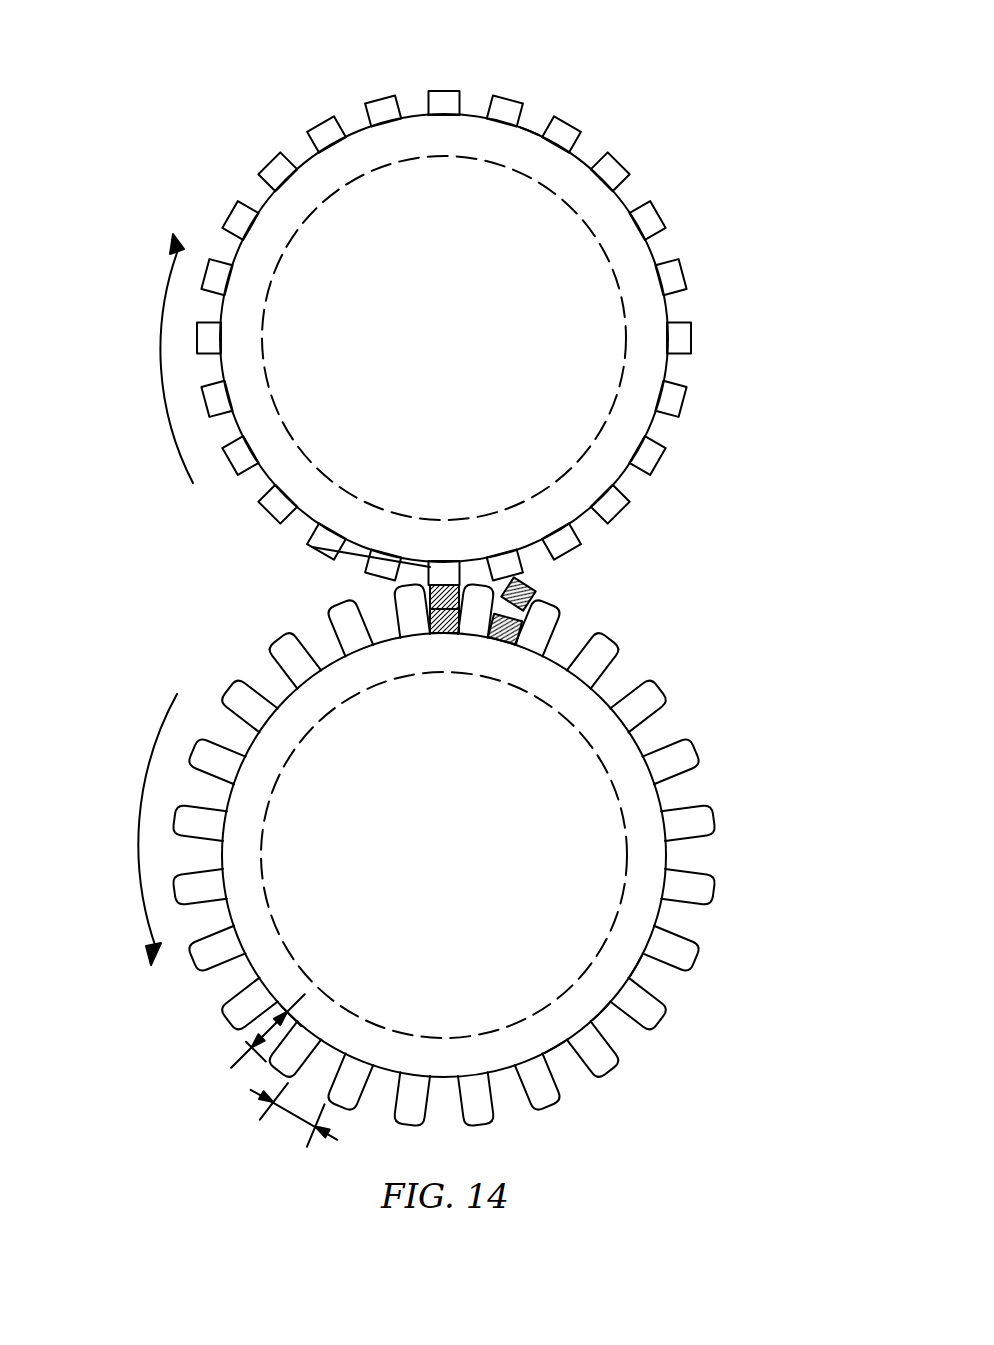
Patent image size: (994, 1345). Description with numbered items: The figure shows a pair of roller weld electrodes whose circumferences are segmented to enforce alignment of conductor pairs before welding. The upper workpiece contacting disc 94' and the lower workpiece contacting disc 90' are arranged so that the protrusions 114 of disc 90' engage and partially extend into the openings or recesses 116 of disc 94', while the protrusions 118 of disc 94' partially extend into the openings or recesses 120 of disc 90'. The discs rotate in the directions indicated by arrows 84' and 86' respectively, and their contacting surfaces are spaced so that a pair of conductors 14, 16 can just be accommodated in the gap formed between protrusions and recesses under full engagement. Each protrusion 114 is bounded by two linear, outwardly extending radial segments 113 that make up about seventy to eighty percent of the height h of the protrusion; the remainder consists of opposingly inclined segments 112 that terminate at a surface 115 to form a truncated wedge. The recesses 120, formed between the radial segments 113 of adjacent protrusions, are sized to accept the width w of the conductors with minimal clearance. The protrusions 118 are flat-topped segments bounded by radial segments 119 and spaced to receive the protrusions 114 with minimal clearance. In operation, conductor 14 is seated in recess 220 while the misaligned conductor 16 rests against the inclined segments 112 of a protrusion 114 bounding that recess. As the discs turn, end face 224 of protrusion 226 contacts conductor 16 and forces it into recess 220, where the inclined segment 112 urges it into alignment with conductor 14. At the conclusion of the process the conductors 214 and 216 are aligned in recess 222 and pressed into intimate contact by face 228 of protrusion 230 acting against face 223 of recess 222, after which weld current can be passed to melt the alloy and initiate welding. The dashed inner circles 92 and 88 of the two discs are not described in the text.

The rotation direction arrow 84' is at (355, 338).
The rotation direction arrow 86' is at (421, 855).
The second roller core 88 is at (279, 773).
The workpiece contacting disc 90' is at (520, 855).
The first roller core 92 is at (558, 192).
The workpiece contacting disc 94' is at (698, 193).
The openings or recesses 116 is at (684, 288).
The protrusions 118 is at (320, 123).
The radial segments 119 is at (520, 117).
The protrusions 114 is at (551, 603).
The inclined segments 112 is at (743, 900).
The radial segments 113 is at (743, 895).
The surface 115 is at (713, 892).
The openings or recesses 120 is at (561, 1058).
The conductor 216 is at (448, 588).
The end face 224 is at (500, 584).
The protrusion 226 is at (524, 574).
The conductor 16 is at (596, 558).
The protrusion 230 is at (312, 547).
The face 228 is at (430, 580).
The conductor 214 is at (430, 634).
The face 223 is at (364, 673).
The recess 222 is at (364, 696).
The recess 220 is at (493, 692).
The conductor 14 is at (507, 640).
The height of the protrusions h is at (243, 1033).
The width of conductors w is at (300, 1119).